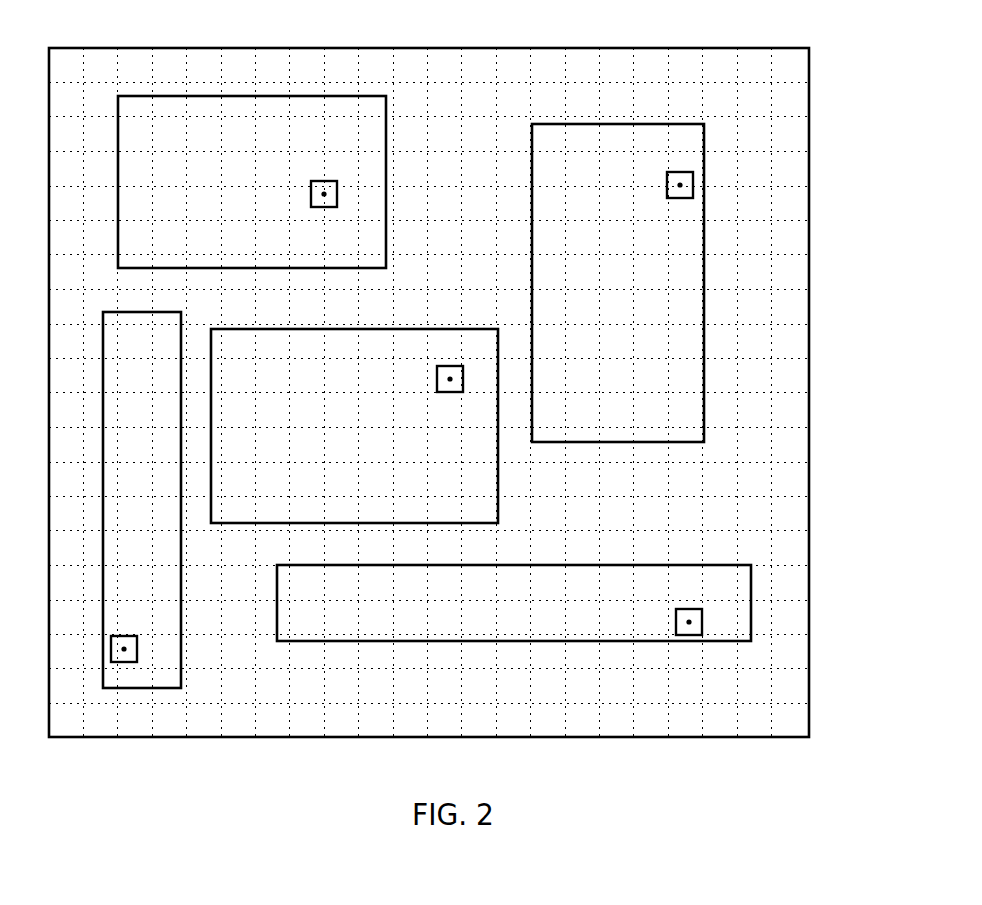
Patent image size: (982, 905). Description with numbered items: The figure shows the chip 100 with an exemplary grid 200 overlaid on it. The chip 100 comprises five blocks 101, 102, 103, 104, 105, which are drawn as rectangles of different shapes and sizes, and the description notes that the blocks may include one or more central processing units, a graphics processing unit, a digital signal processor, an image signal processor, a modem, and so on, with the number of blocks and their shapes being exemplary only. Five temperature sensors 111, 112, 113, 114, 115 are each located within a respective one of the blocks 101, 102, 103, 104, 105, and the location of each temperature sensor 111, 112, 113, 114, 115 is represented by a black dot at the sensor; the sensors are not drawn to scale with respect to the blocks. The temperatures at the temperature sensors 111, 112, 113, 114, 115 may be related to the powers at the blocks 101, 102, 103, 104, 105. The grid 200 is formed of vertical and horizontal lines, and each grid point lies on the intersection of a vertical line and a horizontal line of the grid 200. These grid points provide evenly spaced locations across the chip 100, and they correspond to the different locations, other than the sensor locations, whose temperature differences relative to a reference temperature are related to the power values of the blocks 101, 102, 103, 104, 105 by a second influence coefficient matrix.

The chip 100 is at (954, 126).
The grid 200 is at (803, 76).
The block 101 is at (167, 142).
The block 102 is at (148, 338).
The block 103 is at (328, 596).
The block 104 is at (577, 148).
The block 105 is at (268, 356).
The temperature sensor 111 is at (324, 181).
The temperature sensor 112 is at (124, 636).
The temperature sensor 113 is at (689, 609).
The temperature sensor 114 is at (680, 172).
The temperature sensor 115 is at (450, 366).